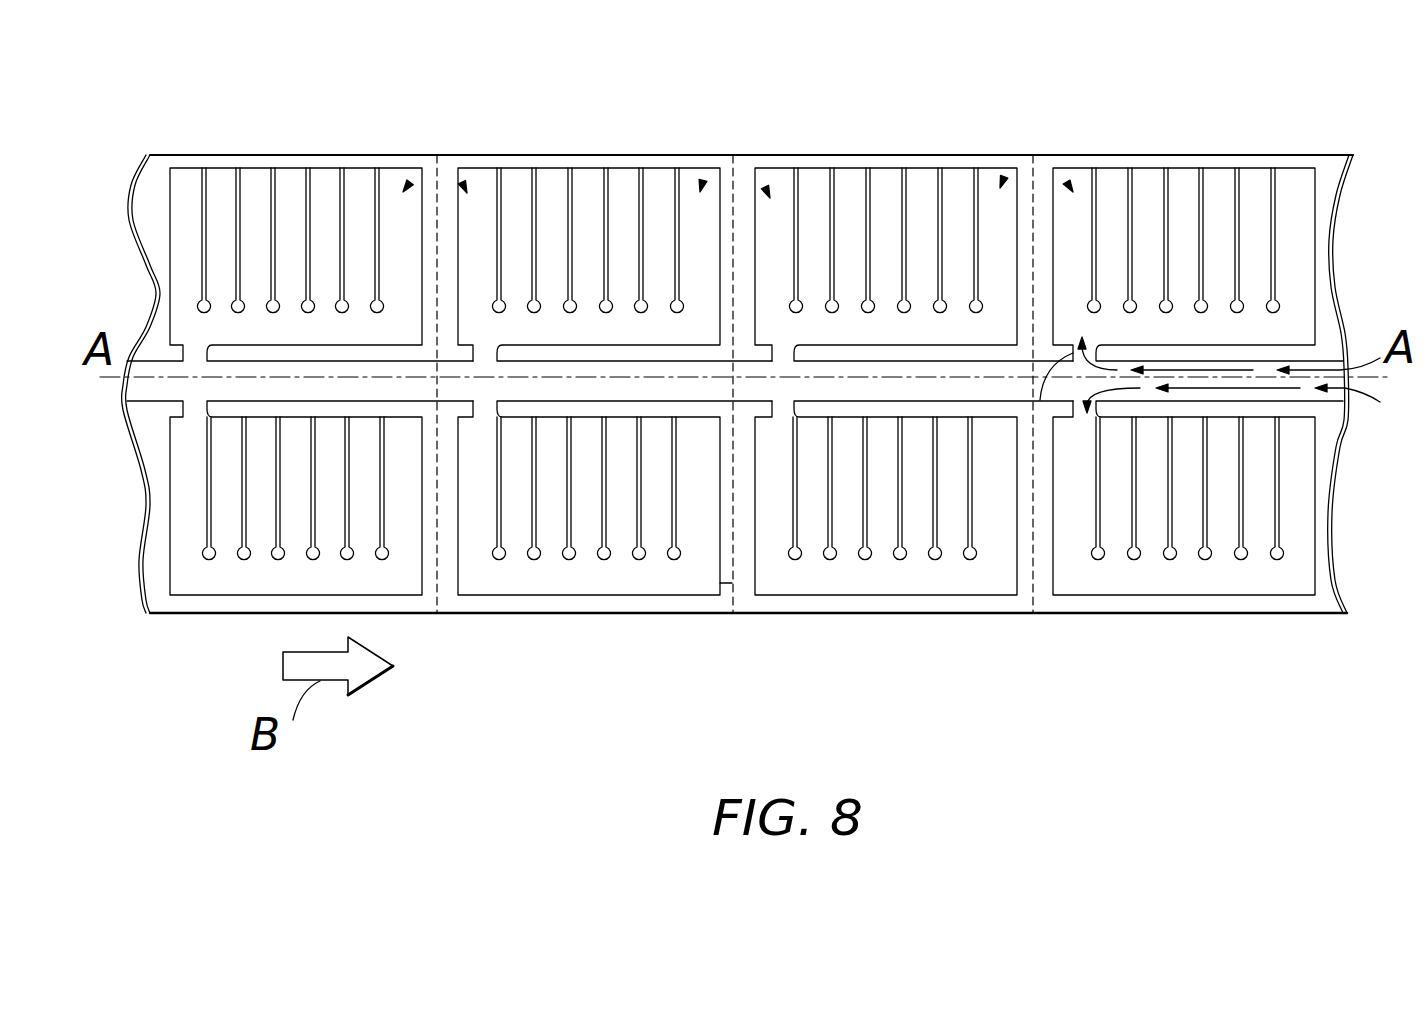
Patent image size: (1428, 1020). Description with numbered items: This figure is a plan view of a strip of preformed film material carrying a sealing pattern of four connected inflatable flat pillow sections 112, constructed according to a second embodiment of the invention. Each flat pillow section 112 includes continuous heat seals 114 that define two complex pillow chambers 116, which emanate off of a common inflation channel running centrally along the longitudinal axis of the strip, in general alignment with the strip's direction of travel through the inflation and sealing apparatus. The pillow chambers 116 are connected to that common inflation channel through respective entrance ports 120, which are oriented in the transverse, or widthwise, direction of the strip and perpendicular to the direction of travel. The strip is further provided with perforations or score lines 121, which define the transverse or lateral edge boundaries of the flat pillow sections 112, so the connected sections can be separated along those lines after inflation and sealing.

The inflatable flat pillow section 112 is at (420, 142).
The continuous heat seal 114 is at (172, 236).
The complex pillow chamber 116 is at (462, 184).
The entrance port 120 is at (180, 405).
The perforation or score line 121 is at (720, 583).